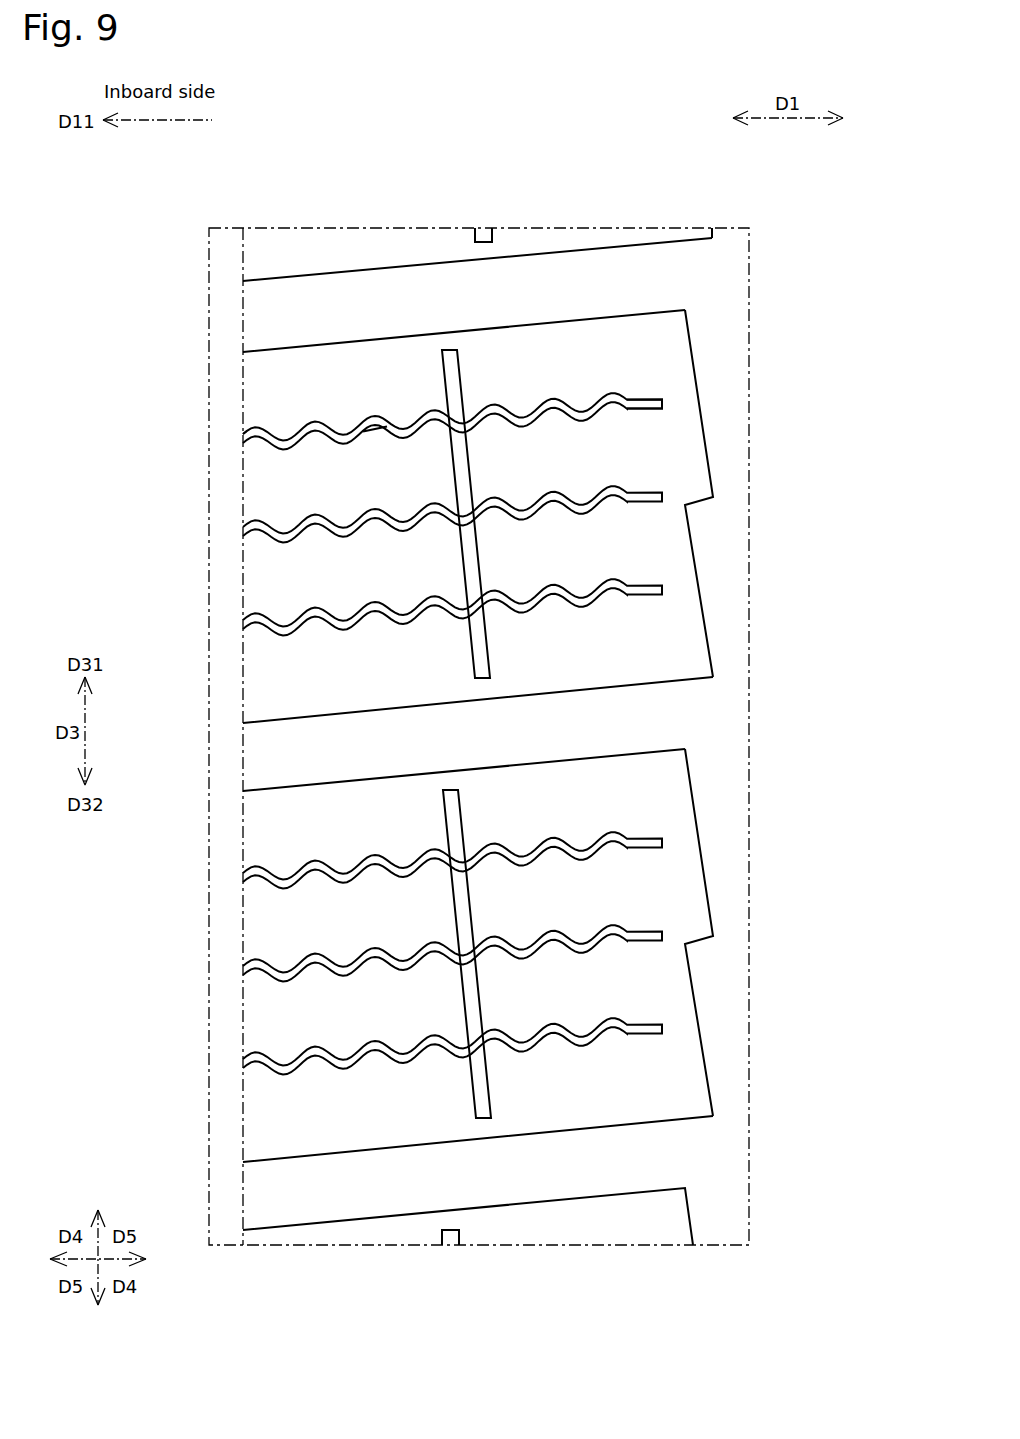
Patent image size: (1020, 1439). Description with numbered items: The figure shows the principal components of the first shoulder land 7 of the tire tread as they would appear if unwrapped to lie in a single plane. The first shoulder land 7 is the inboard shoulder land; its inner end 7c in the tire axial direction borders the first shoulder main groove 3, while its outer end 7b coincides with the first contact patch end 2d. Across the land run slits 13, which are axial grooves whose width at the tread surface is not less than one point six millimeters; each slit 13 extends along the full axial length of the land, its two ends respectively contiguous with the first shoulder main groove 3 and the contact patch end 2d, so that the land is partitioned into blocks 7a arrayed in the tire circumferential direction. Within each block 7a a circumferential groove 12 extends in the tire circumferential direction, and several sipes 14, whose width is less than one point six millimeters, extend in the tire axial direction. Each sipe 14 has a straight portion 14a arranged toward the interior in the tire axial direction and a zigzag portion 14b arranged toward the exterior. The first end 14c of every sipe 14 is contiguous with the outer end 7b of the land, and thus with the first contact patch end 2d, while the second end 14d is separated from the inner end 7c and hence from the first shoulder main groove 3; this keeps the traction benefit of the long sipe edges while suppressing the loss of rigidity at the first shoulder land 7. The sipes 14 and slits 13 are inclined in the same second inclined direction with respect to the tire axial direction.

The first shoulder main groove 3 is at (735, 260).
The first shoulder land 7 is at (447, 243).
The block 7a is at (262, 700).
The outer end of first shoulder land 7b is at (243, 244).
The inner end of first shoulder land 7c is at (690, 335).
The first contact patch end 2d is at (243, 292).
The circumferential groove 12 is at (461, 381).
The slit 13 is at (262, 330).
The sipe 14 is at (644, 419).
The straight portion 14a is at (641, 397).
The zigzag portion 14b is at (374, 428).
The first end of sipe 14c is at (243, 437).
The second end of sipe 14d is at (663, 405).